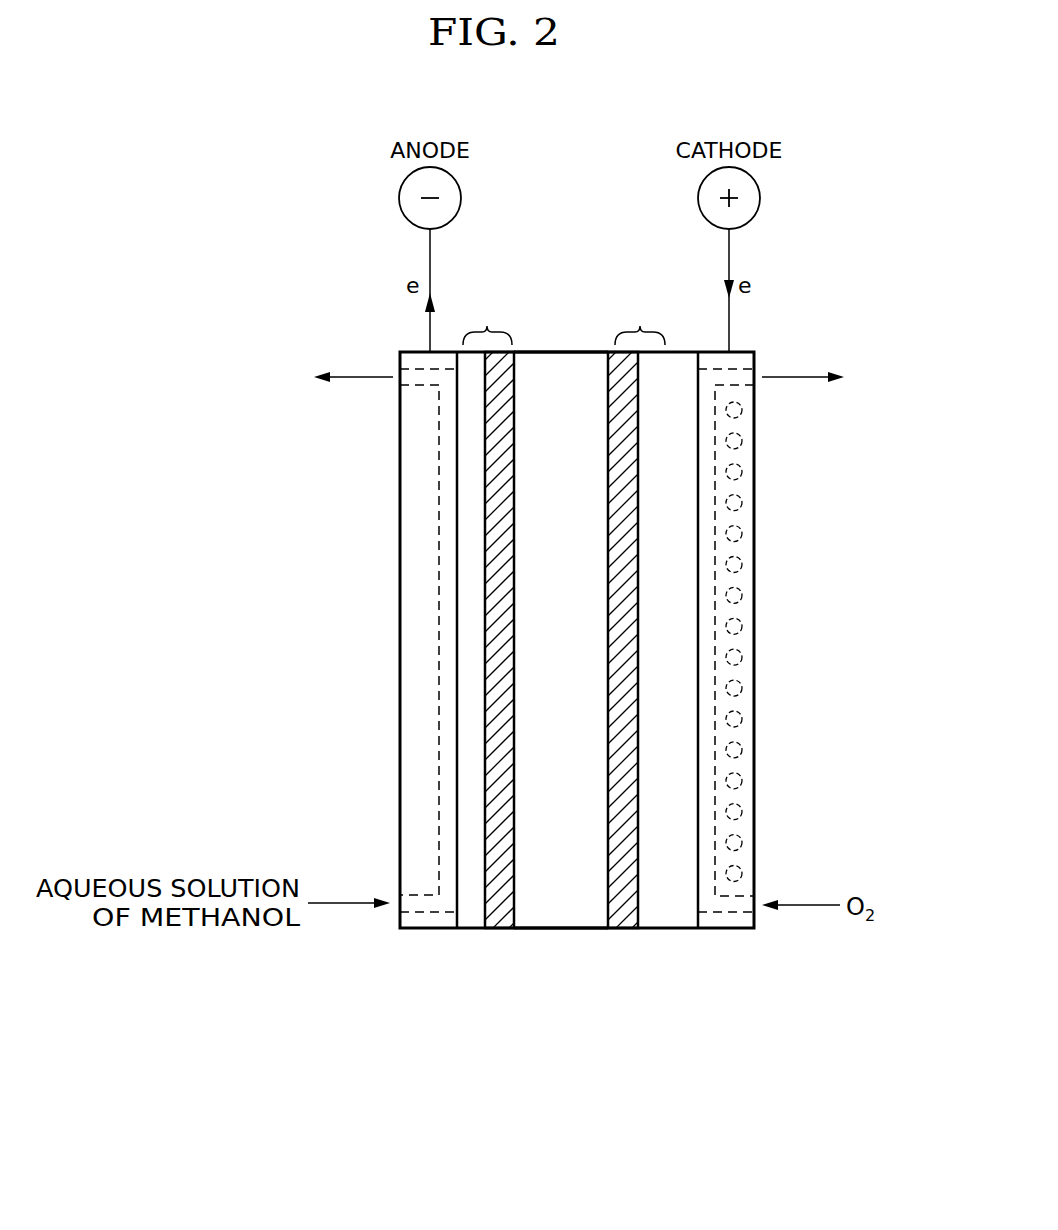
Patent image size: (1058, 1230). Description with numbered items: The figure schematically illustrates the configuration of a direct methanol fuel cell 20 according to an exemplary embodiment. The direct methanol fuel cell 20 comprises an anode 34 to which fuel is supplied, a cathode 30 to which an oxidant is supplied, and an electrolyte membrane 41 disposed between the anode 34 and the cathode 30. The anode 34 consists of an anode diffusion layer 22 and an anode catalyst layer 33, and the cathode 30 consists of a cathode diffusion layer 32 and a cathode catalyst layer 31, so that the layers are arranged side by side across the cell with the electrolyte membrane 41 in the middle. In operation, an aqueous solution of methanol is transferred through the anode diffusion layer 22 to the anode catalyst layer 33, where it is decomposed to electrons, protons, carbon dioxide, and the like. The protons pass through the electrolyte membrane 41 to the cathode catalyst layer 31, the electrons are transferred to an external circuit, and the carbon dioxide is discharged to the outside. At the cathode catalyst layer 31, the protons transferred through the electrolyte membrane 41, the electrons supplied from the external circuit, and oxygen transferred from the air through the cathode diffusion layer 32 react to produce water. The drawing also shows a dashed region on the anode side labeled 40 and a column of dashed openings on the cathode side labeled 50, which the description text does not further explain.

The direct methanol fuel cell 20 is at (398, 1014).
The anode diffusion layer 22 is at (467, 518).
The cathode 30 is at (653, 611).
The cathode catalyst layer 31 is at (620, 920).
The cathode diffusion layer 32 is at (672, 521).
The anode catalyst layer 33 is at (497, 920).
The anode 34 is at (485, 611).
The fuel supply channel 40 is at (420, 610).
The electrolyte membrane 41 is at (559, 920).
The oxygen supply holes 50 is at (733, 611).